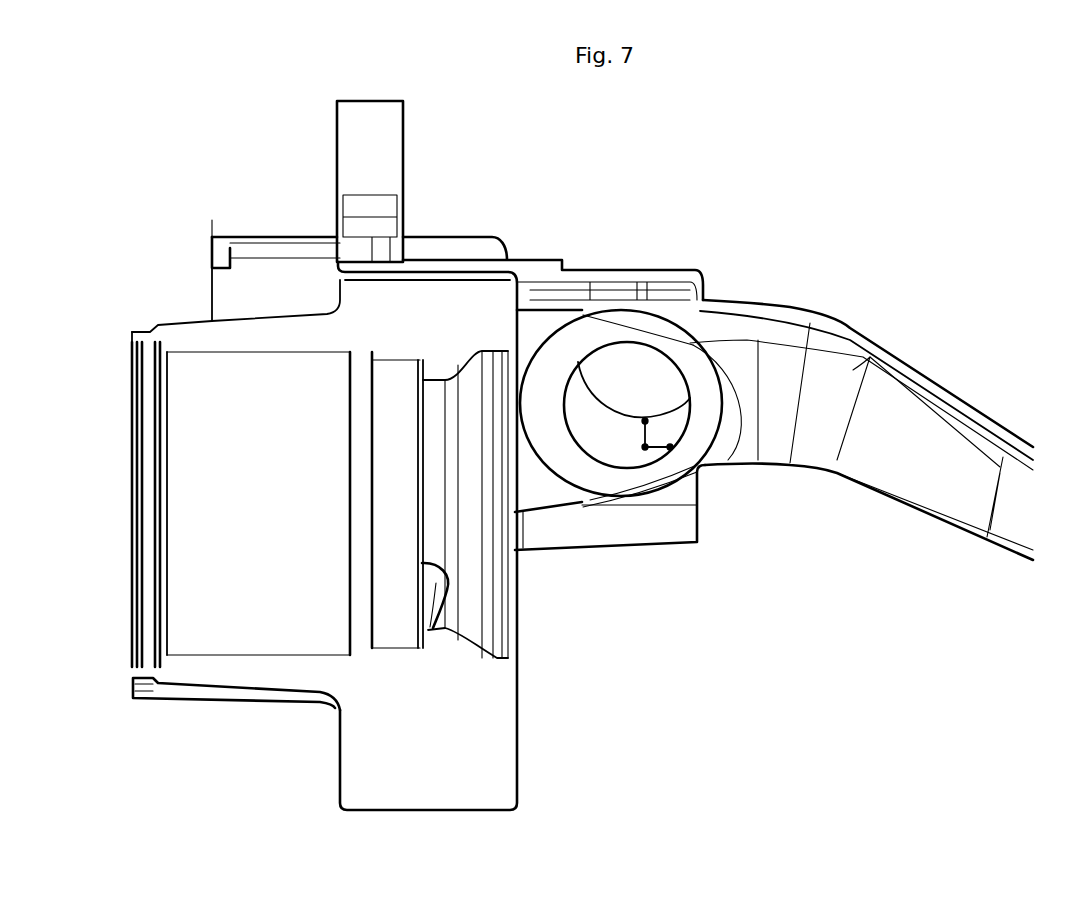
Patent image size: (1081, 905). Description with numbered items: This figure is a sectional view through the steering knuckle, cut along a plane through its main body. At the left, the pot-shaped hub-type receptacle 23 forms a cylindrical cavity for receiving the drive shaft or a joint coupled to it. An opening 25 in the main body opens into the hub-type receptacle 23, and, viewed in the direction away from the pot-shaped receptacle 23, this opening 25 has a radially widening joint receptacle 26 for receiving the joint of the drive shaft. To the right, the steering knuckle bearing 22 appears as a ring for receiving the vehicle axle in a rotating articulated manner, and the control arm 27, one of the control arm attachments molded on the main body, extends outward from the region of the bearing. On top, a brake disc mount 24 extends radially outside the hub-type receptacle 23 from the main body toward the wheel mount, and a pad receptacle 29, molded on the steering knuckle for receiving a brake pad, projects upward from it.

The steering knuckle bearing 22 is at (690, 355).
The hub-type receptacle 23 is at (200, 668).
The brake disc mount 24 is at (247, 248).
The opening 25 is at (417, 568).
The joint receptacle 26 is at (490, 623).
The control arm 27 is at (963, 468).
The pad receptacle 29 is at (380, 137).